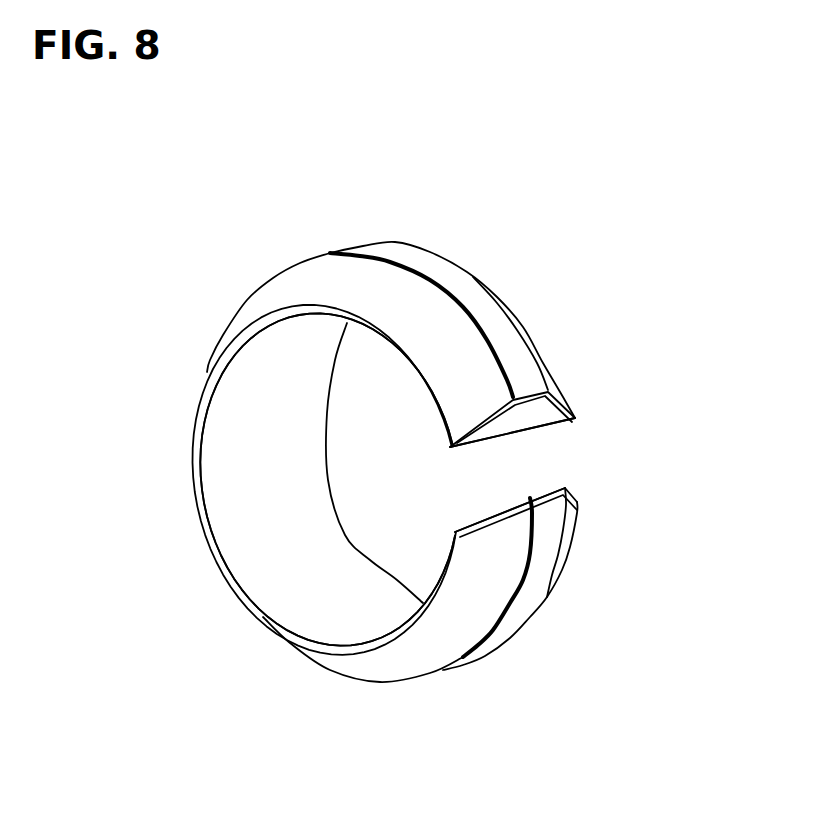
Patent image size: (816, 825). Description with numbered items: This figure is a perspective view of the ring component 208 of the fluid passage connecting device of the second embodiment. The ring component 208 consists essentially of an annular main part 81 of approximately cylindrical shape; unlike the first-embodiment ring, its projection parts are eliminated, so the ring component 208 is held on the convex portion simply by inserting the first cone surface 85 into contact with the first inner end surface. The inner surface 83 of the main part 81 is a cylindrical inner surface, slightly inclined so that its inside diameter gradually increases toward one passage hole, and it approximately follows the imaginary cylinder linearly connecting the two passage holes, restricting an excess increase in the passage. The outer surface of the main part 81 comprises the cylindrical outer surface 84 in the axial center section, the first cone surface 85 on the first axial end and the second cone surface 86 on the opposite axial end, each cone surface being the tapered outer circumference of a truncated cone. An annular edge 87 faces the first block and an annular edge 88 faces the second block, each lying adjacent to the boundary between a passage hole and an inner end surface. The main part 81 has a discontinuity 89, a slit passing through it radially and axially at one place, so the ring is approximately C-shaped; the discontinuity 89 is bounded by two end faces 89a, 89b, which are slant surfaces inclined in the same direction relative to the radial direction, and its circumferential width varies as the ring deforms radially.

The main part 81 is at (467, 270).
The inner surface 83 is at (300, 583).
The cylindrical outer surface 84 is at (420, 263).
The first cone surface 85 is at (323, 285).
The second cone surface 86 is at (552, 378).
The edge 87 is at (220, 553).
The edge 88 is at (323, 477).
The discontinuity 89 is at (537, 455).
The end face 89a is at (507, 500).
The end face 89b is at (533, 415).
The ring component 208 is at (542, 257).